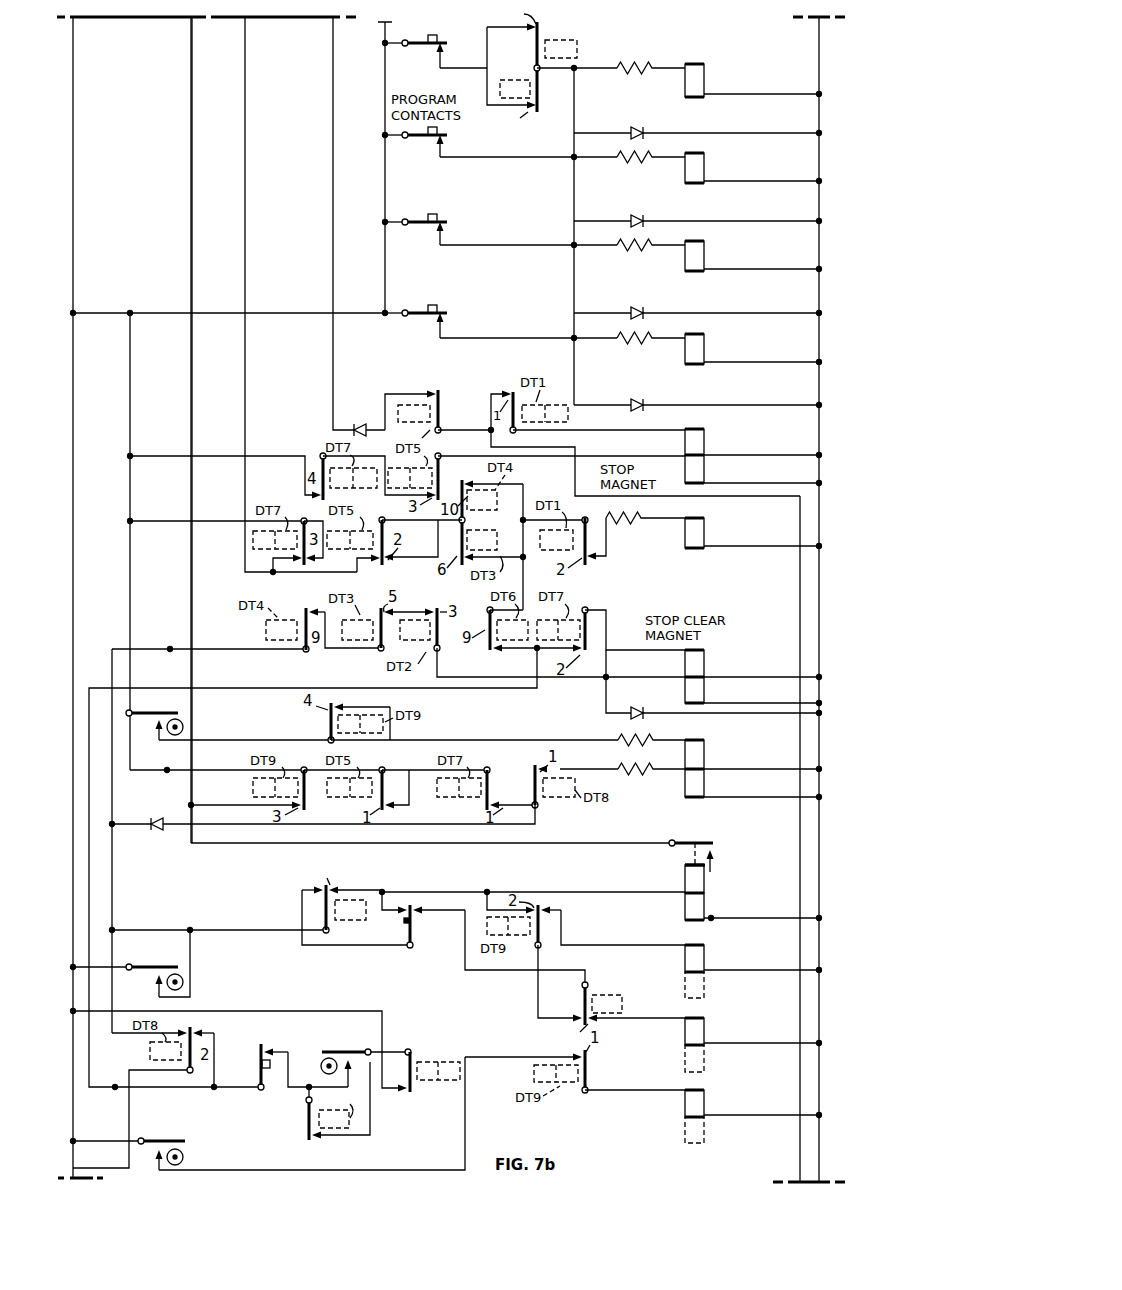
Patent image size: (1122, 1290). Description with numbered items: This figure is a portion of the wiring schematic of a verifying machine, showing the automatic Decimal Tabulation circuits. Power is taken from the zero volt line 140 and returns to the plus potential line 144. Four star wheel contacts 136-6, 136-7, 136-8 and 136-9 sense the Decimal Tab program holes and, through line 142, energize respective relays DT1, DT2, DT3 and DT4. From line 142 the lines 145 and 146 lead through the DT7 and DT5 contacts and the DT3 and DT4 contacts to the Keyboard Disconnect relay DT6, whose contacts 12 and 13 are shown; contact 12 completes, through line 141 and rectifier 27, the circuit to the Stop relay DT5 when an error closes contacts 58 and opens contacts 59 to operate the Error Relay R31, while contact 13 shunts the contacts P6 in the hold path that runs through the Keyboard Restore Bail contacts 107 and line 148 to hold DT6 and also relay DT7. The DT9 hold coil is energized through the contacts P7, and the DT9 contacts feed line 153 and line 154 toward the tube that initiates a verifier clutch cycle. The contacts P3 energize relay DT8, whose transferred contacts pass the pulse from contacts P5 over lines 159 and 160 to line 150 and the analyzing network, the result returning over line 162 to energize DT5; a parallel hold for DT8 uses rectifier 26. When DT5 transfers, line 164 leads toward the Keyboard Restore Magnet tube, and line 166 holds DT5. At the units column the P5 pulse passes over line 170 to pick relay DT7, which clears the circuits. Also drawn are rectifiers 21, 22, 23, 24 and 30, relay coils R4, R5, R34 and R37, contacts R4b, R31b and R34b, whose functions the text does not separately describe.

The zero volt line 140 is at (74, 72).
The line 141 is at (333, 188).
The line 142 is at (85, 313).
The plus potential line 144 is at (800, 886).
The line 145 is at (130, 395).
The line 146 is at (168, 521).
The line 148 is at (118, 1090).
The line 150 is at (129, 1132).
The line 153 is at (165, 770).
The line 154 is at (192, 592).
The line 159 is at (191, 960).
The line 160 is at (112, 960).
The line 162 is at (800, 838).
The line 164 is at (245, 400).
The line 166 is at (230, 456).
The line 170 is at (176, 649).
The star wheel contacts 136-6 is at (432, 167).
The star wheel contacts 136-7 is at (500, 144).
The star wheel contacts 136-8 is at (500, 231).
The star wheel contacts 136-9 is at (501, 322).
The contacts DT6- 12 is at (436, 390).
The contacts DT6- 13 is at (312, 1142).
The diode 21 is at (630, 214).
The diode 22 is at (633, 306).
The diode 23 is at (634, 398).
The diode 24 is at (636, 710).
The rectifier 26 is at (157, 818).
The rectifier 27 is at (356, 426).
The diode 30 is at (633, 126).
The contacts 58 is at (418, 912).
The contacts 59 is at (406, 916).
The Keyboard Restore Bail contacts 107 is at (265, 1048).
The relay DT1 is at (704, 80).
The relay DT2 is at (704, 169).
The relay DT3 is at (704, 257).
The relay DT4 is at (704, 350).
The Stop relay DT5 is at (706, 442).
The Keyboard Disconnect relay DT6 is at (706, 532).
The relay DT7 is at (706, 668).
The relay DT8 is at (706, 757).
The relay DT9 is at (708, 1106).
The relay R4 coil R4 is at (572, 40).
The relay R4 contact R4b is at (713, 872).
The relay R5 contact R5 is at (360, 922).
The Error Relay R31 is at (708, 958).
The relay R31 contact R31b is at (448, 1060).
The relay R34 contact R34 is at (525, 66).
The relay R34 contact b R34b is at (630, 990).
The relay R37 coil R37 is at (708, 1030).
The contacts P3 is at (183, 726).
The contacts P5 is at (184, 982).
The contacts P6 is at (322, 1062).
The contacts P7 is at (184, 1155).